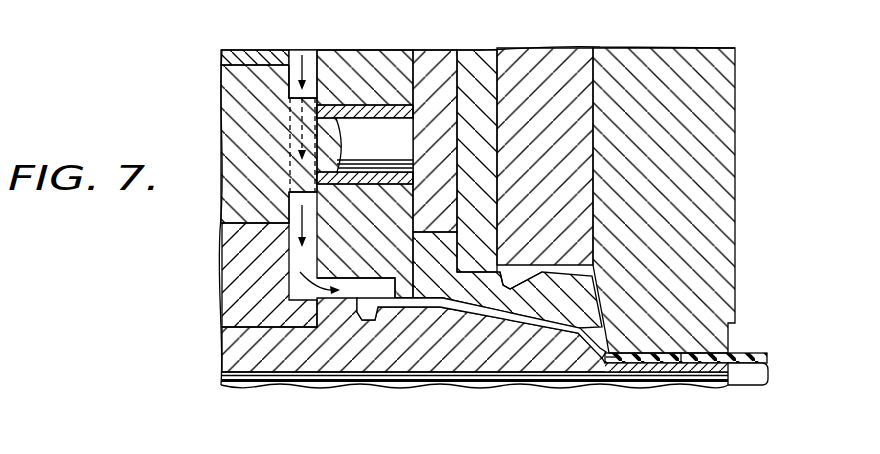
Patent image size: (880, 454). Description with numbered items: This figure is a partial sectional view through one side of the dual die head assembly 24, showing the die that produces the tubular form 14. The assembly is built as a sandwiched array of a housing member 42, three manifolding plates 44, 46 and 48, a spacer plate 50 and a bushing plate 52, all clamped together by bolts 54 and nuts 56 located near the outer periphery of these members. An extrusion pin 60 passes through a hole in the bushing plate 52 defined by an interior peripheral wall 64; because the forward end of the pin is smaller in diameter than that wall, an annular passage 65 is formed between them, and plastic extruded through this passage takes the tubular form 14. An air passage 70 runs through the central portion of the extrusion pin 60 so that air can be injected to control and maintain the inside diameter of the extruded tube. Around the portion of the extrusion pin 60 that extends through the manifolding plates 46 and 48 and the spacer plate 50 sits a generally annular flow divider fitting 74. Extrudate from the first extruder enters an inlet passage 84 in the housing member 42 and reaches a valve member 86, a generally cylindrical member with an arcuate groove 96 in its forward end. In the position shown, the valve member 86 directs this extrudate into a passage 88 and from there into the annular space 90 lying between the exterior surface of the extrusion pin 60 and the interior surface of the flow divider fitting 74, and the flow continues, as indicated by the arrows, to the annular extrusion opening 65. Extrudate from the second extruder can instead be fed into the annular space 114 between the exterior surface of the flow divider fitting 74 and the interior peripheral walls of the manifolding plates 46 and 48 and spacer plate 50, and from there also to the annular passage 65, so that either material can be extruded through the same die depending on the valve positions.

The tubular form 14 is at (766, 351).
The dual die head assembly 24 is at (194, 296).
The housing member 42 is at (240, 50).
The manifolding plate 44 is at (364, 55).
The manifolding plate 46 is at (430, 55).
The manifolding plate 48 is at (474, 52).
The spacer plate 50 is at (554, 56).
The bushing plate 52 is at (662, 58).
The bolts 54 is at (750, 6).
The nuts 56 is at (851, 6).
The extrusion pin 60 is at (228, 359).
The interior peripheral wall 64 is at (681, 353).
The annular passage 65 is at (634, 345).
The air passage 70 is at (531, 383).
The flow divider fitting 74 is at (564, 266).
The inlet passage 84 is at (293, 52).
The valve member 86 is at (222, 108).
The passage 88 is at (298, 258).
The annular space 90 is at (374, 318).
The arcuate groove 96 is at (292, 80).
The annular space 114 is at (517, 278).